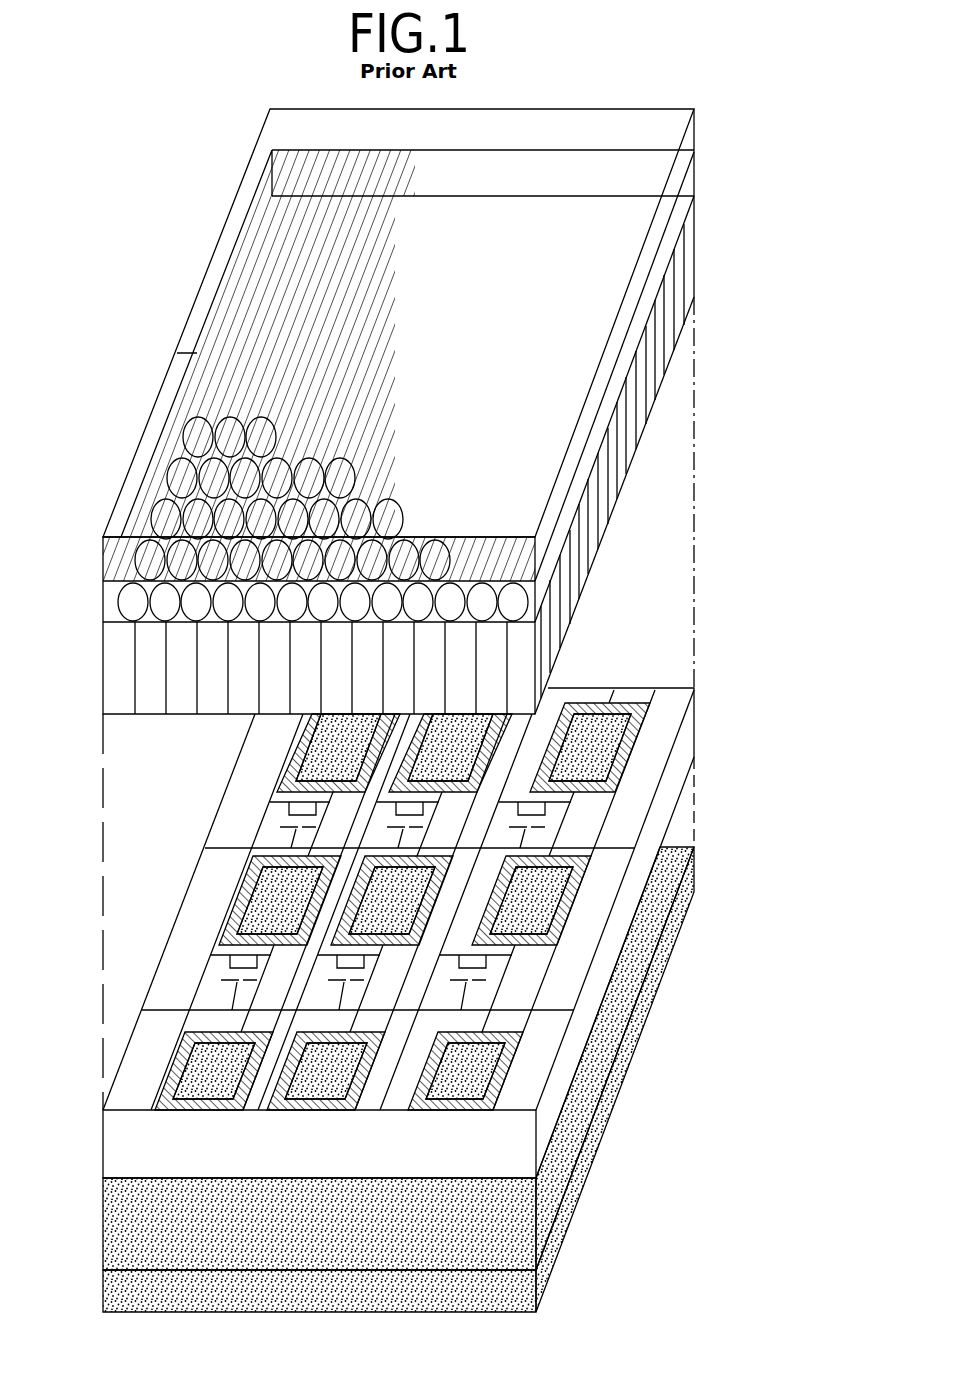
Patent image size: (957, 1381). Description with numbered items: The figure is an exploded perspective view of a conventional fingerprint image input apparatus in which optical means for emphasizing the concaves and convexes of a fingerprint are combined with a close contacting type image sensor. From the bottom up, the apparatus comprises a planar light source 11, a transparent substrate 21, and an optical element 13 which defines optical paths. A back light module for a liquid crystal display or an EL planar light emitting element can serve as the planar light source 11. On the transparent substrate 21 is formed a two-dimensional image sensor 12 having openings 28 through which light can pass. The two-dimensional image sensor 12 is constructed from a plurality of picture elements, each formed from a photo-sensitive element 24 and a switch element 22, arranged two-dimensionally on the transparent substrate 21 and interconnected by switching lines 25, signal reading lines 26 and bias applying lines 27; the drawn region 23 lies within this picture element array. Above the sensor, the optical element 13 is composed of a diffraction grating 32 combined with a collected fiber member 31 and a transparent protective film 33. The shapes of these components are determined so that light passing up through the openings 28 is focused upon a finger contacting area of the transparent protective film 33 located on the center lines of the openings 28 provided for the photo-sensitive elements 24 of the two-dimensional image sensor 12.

The planar light source 11 is at (576, 1268).
The two-dimensional image sensor 12 is at (708, 708).
The optical element 13 is at (711, 213).
The transparent substrate 21 is at (118, 1147).
The switch element 22 is at (563, 817).
The phosphor layer 23 is at (357, 1108).
The photo-sensitive element 24 is at (302, 1110).
The switching line 25 is at (552, 1010).
The signal reading line 26 is at (408, 1090).
The bias applying line 27 is at (507, 987).
The opening 28 is at (583, 935).
The collected fiber member 31 is at (583, 555).
The diffraction grating 32 is at (610, 428).
The transparent protective film 33 is at (624, 320).